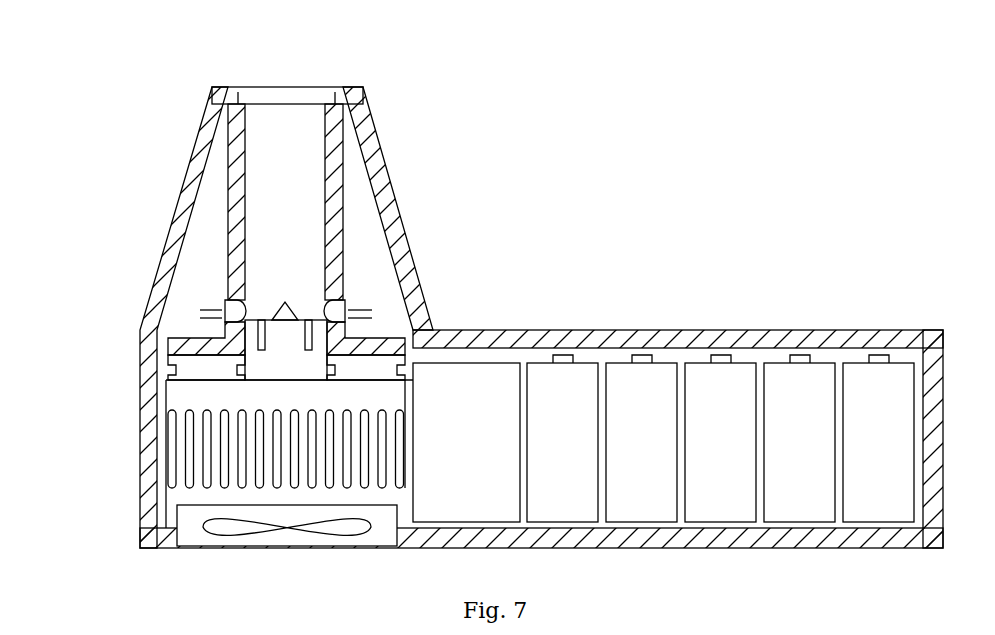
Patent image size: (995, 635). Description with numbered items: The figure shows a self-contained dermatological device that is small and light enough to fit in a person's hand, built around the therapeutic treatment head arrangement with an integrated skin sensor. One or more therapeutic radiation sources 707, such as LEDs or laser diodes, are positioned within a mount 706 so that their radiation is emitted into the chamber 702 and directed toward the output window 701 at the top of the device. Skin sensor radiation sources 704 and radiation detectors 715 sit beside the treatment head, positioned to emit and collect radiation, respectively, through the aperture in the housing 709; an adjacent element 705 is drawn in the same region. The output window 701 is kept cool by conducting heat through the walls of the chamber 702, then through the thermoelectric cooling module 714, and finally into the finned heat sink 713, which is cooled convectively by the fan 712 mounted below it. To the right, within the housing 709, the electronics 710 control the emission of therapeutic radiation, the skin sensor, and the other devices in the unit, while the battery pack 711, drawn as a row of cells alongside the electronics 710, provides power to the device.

The output window 701 is at (317, 95).
The chamber 702 is at (333, 157).
The skin sensor radiation sources 704 is at (352, 311).
The sealing ring 705 is at (336, 300).
The mount 706 is at (252, 364).
The therapeutic radiation sources 707 is at (230, 338).
The housing 709 is at (586, 338).
The electronics 710 is at (457, 385).
The battery pack 711 is at (713, 375).
The fan 712 is at (190, 518).
The finned heat sink 713 is at (193, 402).
The thermoelectric cooling module 714 is at (212, 372).
The radiation detectors 715 is at (228, 306).